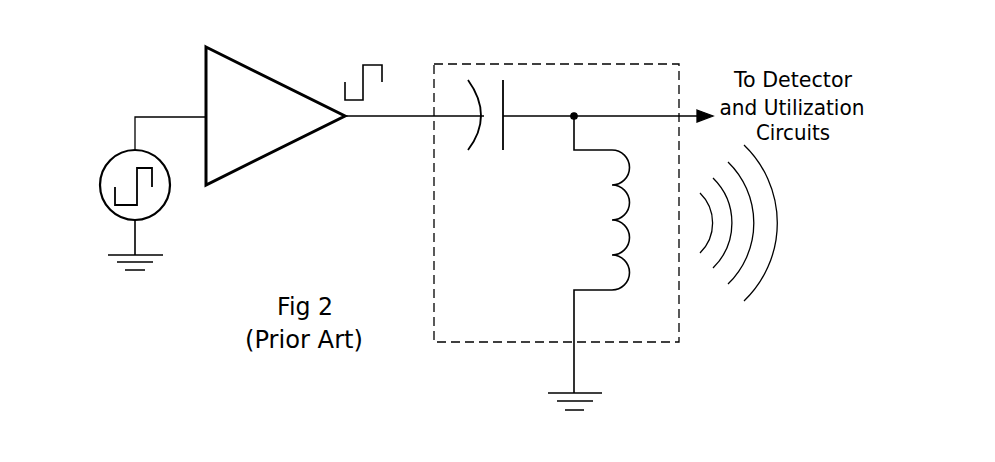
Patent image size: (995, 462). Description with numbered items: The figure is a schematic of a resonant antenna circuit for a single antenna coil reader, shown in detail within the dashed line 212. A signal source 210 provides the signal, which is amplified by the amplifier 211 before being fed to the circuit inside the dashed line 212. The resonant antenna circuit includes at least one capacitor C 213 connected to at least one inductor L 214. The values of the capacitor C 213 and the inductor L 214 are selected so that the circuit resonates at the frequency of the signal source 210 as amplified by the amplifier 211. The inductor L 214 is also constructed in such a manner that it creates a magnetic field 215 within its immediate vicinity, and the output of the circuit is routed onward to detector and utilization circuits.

The signal source 210 is at (100, 152).
The amplifier 211 is at (240, 187).
The dashed line 212 is at (417, 150).
The capacitor C 213 is at (520, 107).
The inductor L 214 is at (600, 217).
The magnetic field 215 is at (792, 237).